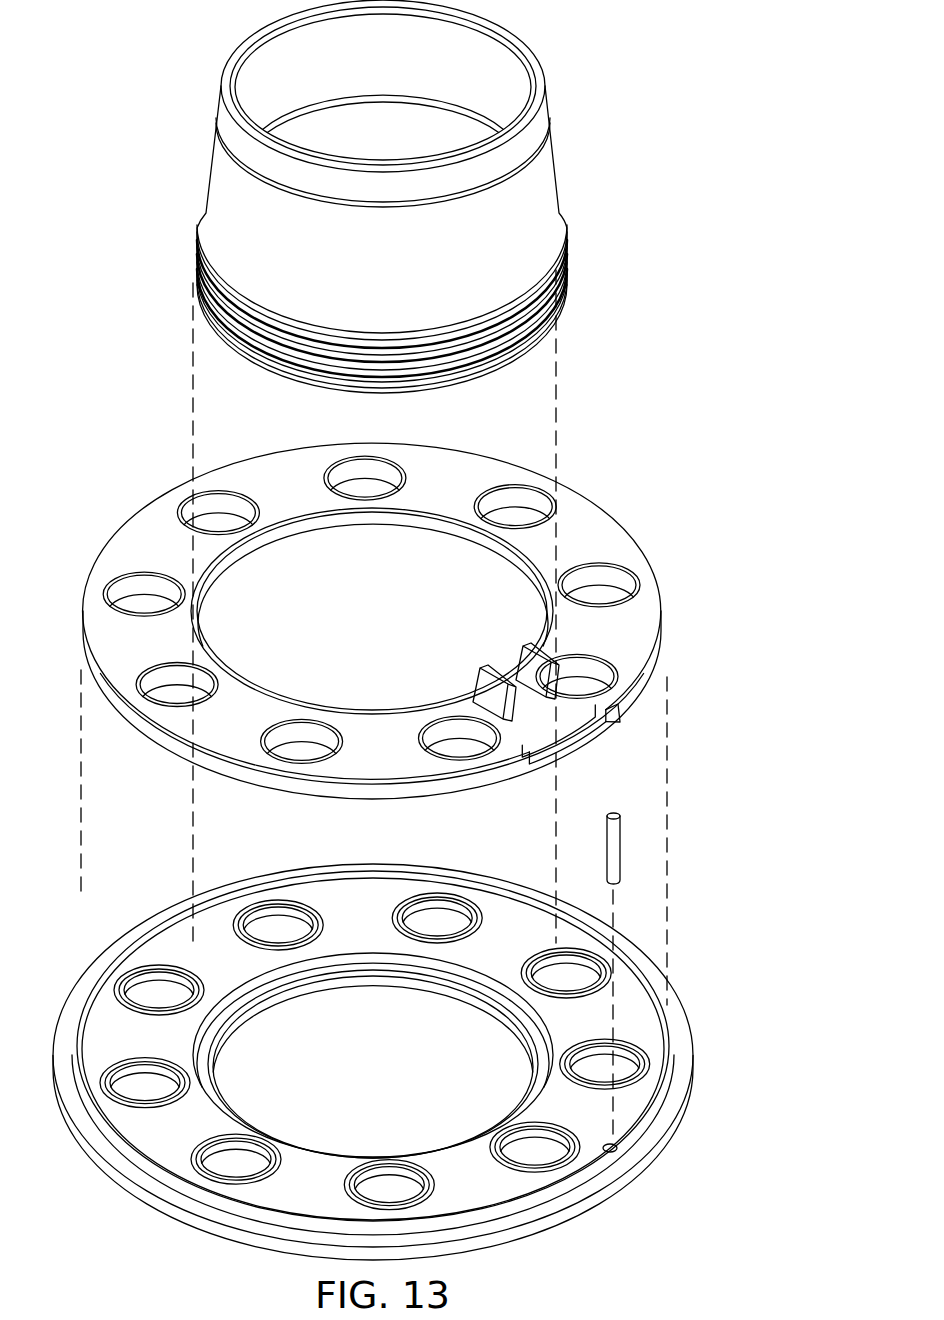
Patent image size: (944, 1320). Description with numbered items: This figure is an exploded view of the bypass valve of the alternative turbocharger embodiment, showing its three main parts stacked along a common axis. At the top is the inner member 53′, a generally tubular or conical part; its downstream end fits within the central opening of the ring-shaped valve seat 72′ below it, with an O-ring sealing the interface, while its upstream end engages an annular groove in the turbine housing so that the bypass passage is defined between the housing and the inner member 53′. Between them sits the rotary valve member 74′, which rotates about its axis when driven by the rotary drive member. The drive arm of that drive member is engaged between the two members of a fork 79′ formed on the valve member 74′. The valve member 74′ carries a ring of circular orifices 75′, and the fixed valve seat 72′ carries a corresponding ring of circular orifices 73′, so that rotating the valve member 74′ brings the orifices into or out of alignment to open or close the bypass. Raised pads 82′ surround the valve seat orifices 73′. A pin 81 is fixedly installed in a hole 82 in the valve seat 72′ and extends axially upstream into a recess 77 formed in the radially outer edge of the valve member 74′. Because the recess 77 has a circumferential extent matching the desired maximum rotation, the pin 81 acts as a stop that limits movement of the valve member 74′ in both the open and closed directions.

The inner member 53′ is at (540, 177).
The rotary valve member 74′ is at (423, 621).
The orifices 75′ is at (522, 512).
The fork 79′ is at (462, 673).
The recess 77 is at (577, 740).
The pin 81 is at (613, 840).
The fixed valve seat 72′ is at (418, 1062).
The orifices 73′ is at (424, 924).
The raised pads 82′ is at (358, 1176).
The hole 82 is at (610, 1152).